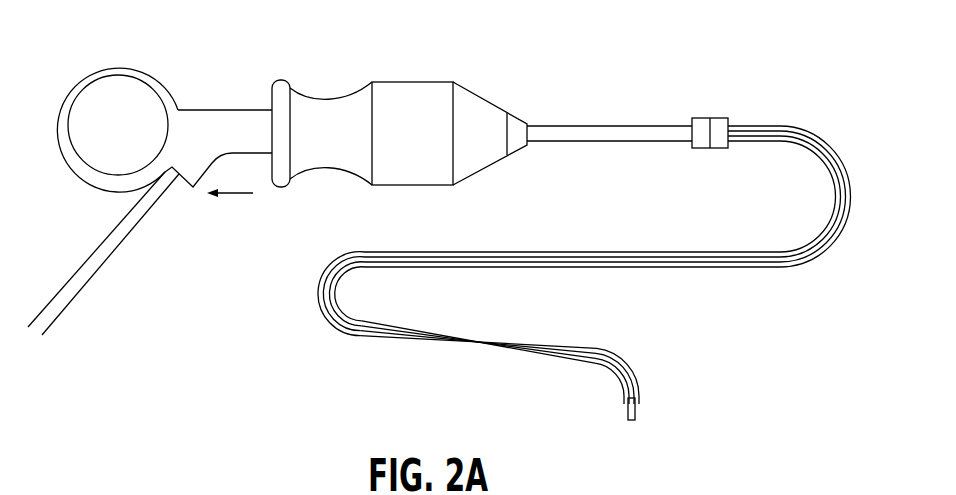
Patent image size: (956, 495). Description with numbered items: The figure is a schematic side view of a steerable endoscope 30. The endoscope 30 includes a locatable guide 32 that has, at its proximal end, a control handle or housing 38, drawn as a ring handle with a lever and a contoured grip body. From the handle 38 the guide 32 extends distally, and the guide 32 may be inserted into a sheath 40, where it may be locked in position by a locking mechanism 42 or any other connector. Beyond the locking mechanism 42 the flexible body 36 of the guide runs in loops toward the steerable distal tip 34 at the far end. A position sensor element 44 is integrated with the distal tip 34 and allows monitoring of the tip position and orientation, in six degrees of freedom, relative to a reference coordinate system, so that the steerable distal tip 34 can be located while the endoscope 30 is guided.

The endoscope 30 is at (778, 73).
The locatable guide 32 is at (632, 143).
The steerable distal tip 34 is at (633, 372).
The flexible body 36 is at (783, 268).
The control handle 38 is at (340, 73).
The sheath 40 is at (797, 249).
The locking mechanism 42 is at (702, 118).
The position sensor element 44 is at (637, 408).